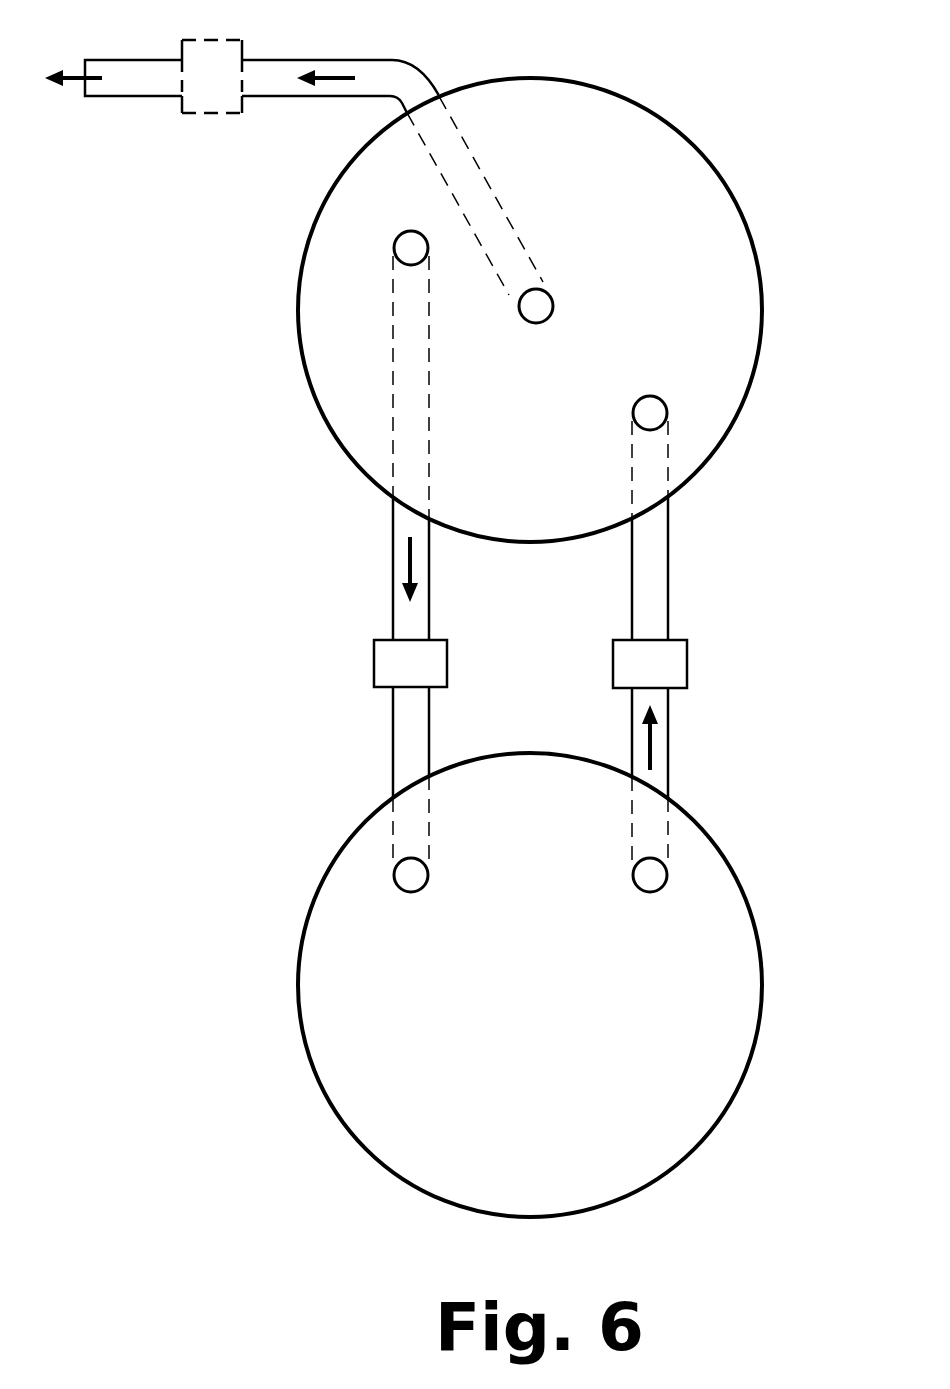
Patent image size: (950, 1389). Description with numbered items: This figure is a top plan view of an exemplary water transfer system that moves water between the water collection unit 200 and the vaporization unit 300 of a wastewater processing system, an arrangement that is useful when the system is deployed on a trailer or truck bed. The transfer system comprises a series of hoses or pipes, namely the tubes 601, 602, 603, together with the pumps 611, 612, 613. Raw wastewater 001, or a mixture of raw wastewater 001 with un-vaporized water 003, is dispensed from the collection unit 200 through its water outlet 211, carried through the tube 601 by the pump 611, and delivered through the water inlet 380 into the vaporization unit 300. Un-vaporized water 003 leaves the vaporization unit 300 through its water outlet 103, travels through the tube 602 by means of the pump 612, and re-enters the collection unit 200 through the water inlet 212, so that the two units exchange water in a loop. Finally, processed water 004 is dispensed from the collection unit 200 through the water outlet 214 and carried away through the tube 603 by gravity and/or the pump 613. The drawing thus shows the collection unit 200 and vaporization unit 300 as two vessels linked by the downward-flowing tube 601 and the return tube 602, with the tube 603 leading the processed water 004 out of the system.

The water collection unit 200 is at (692, 140).
The vaporization unit 300 is at (757, 927).
The water outlet 211 is at (405, 242).
The water inlet 212 is at (655, 420).
The water outlet 214 is at (545, 312).
The water inlet 380 is at (417, 877).
The water outlet 103 is at (643, 882).
The tube 601 is at (429, 615).
The tube 602 is at (668, 620).
The tube 603 is at (360, 60).
The pump 611 is at (383, 665).
The pump 612 is at (673, 660).
The pump 613 is at (237, 40).
The raw wastewater 001 is at (405, 572).
The un-vaporized water 003 is at (650, 733).
The processed water 004 is at (73, 72).